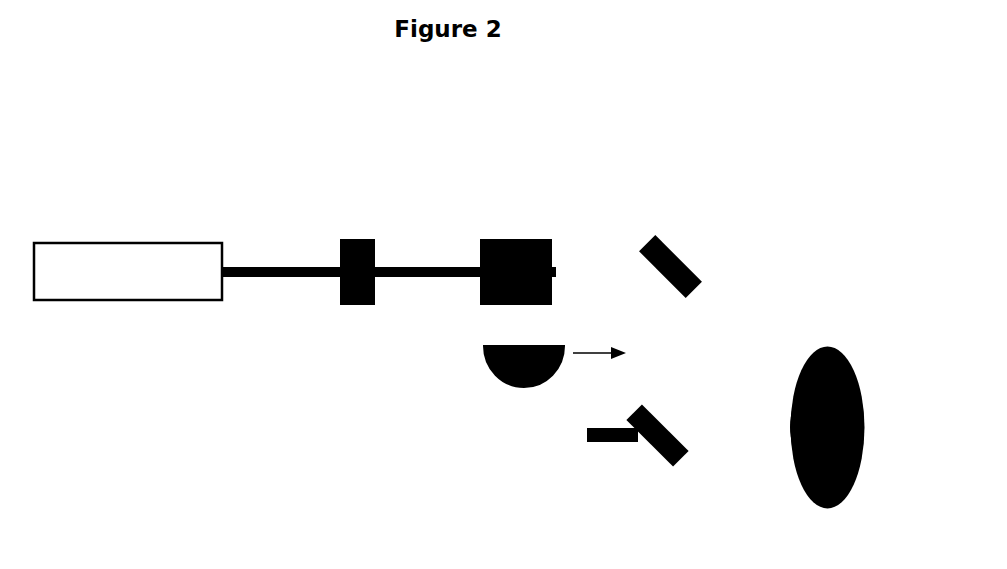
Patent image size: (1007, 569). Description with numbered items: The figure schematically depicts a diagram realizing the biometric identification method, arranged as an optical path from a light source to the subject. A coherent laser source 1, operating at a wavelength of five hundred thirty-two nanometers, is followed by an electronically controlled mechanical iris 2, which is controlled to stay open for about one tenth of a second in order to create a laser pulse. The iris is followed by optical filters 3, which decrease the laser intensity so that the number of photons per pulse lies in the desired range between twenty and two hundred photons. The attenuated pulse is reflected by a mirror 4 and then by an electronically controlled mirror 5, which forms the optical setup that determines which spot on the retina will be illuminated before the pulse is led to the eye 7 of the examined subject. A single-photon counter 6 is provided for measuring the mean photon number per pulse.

The coherent laser source 1 is at (128, 253).
The electronically controlled mechanical iris 2 is at (357, 255).
The optical filters 3 is at (516, 255).
The mirror 4 is at (670, 255).
The electronically controlled mirror 5 is at (638, 437).
The single-photon counter 6 is at (517, 369).
The eye of the examined subject 7 is at (827, 410).